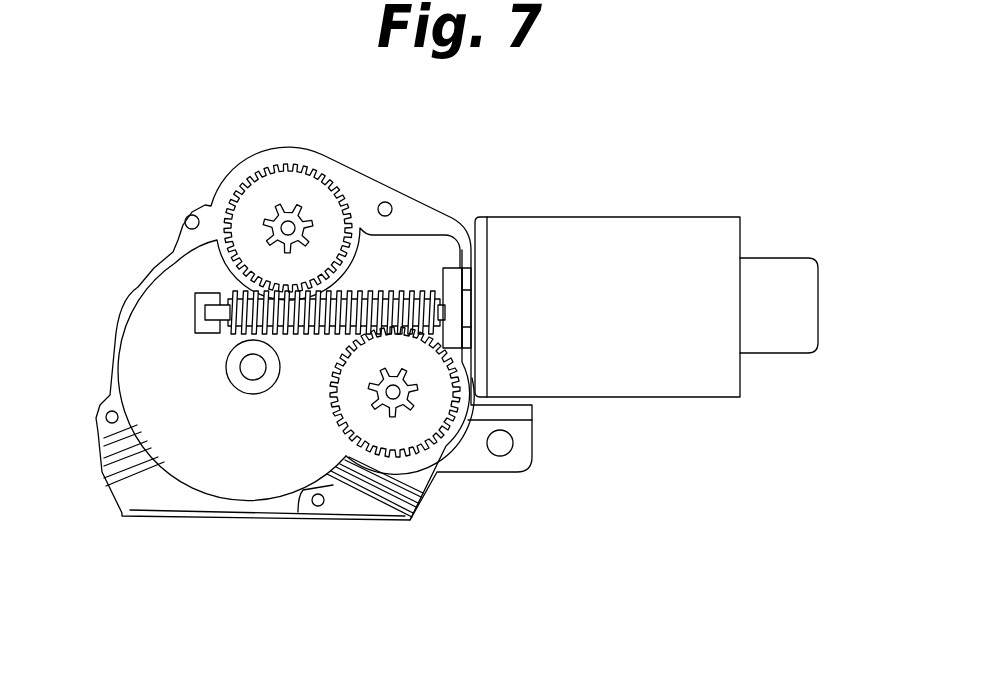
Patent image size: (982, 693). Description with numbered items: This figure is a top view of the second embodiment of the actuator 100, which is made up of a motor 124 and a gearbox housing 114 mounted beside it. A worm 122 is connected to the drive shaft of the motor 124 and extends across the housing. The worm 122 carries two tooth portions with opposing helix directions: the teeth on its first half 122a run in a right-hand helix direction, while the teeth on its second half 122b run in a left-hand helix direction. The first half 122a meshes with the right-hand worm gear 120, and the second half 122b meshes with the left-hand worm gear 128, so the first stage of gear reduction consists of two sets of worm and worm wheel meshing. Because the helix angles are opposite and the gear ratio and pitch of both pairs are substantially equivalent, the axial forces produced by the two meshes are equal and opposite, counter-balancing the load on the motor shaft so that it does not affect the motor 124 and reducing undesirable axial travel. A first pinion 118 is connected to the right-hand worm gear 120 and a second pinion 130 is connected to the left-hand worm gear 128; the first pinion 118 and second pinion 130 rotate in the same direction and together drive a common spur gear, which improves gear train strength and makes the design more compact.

The actuator 100 is at (563, 190).
The gearbox housing 114 is at (242, 520).
The first pinion 118 is at (385, 410).
The right-hand worm gear 120 is at (430, 430).
The worm 122 is at (405, 292).
The first half of the worm 122a is at (430, 280).
The second half of the worm 122b is at (228, 285).
The motor 124 is at (680, 397).
The left-hand worm gear 128 is at (313, 163).
The second pinion 130 is at (303, 222).